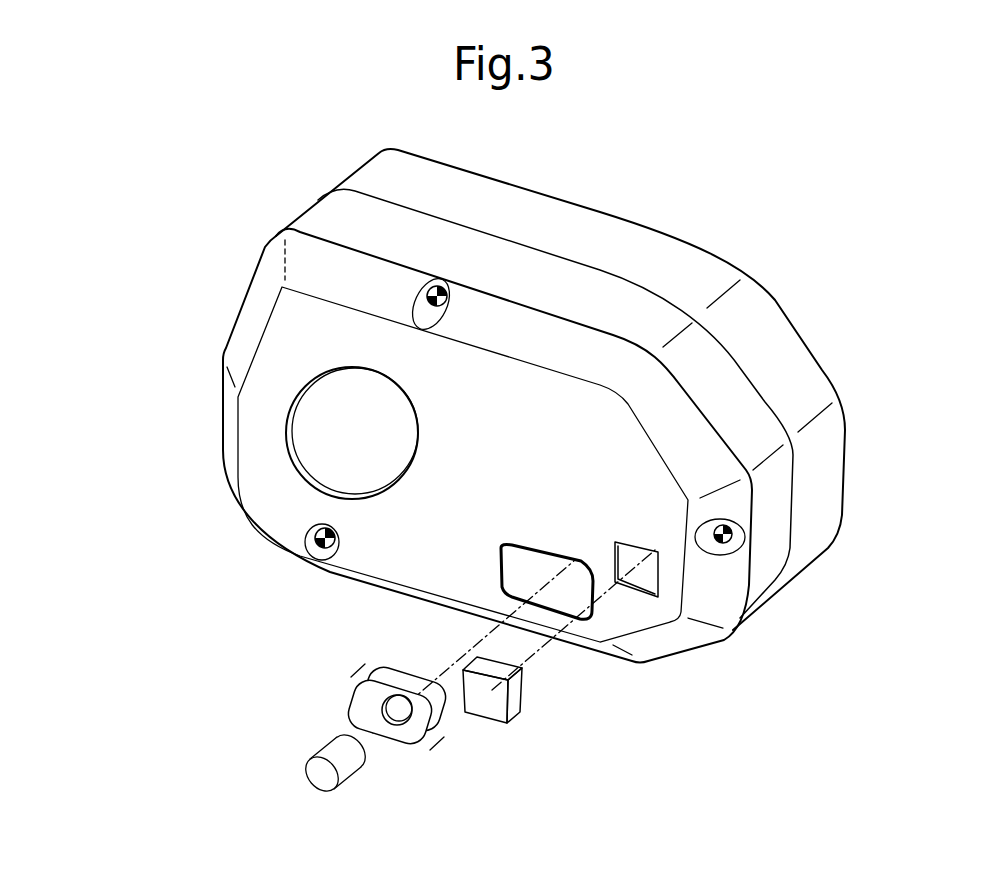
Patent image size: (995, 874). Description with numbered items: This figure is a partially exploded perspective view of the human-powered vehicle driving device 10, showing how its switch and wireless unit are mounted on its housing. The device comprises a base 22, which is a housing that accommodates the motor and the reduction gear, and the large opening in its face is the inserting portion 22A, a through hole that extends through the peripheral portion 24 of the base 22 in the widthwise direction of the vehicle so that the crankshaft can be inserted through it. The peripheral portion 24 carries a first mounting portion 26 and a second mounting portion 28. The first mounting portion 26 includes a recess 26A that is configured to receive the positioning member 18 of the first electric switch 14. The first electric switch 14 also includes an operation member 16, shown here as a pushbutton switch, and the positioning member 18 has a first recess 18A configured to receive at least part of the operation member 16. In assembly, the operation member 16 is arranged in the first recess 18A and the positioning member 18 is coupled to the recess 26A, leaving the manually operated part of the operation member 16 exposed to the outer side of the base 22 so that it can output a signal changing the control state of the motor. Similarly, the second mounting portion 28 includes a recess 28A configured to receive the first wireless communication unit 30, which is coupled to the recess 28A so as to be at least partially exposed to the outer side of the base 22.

The human-powered vehicle driving device 10 is at (744, 181).
The first electric switch 14 is at (278, 754).
The operation member 16 is at (337, 740).
The positioning member 18 is at (457, 727).
The first recess 18A is at (398, 723).
The base 22 is at (306, 171).
The inserting portion 22A is at (413, 433).
The peripheral portion 24 is at (718, 597).
The first mounting portion 26 is at (499, 521).
The recess 26A is at (497, 572).
The second mounting portion 28 is at (611, 523).
The recess 28A is at (643, 583).
The first wireless communication unit 30 is at (522, 695).